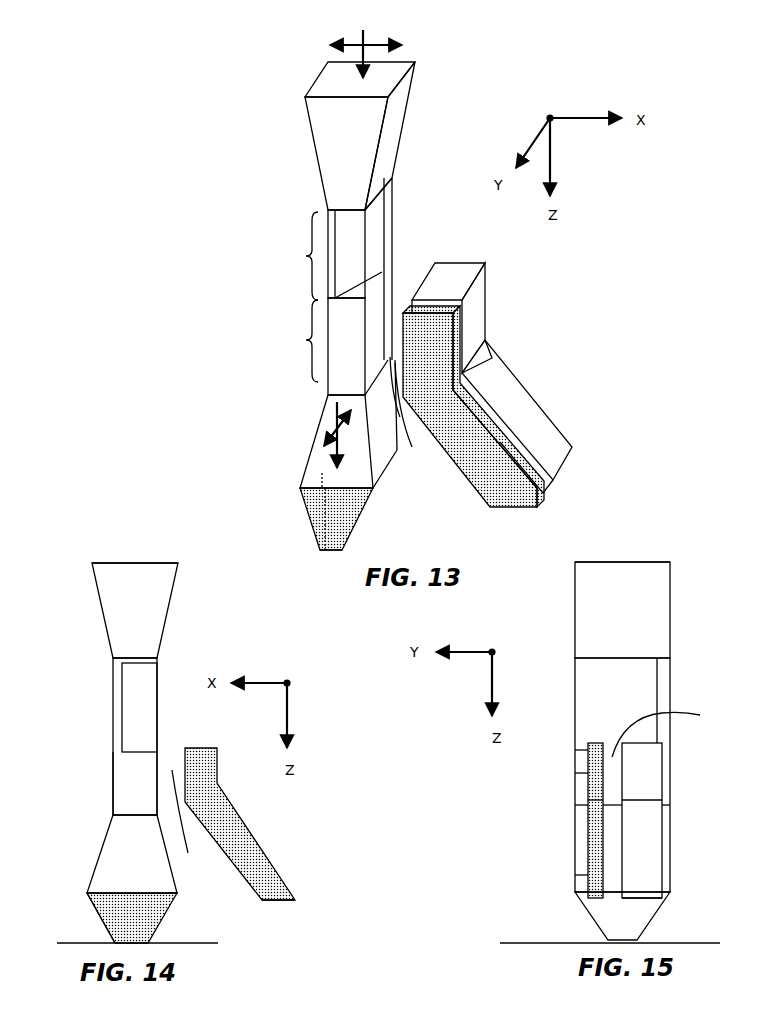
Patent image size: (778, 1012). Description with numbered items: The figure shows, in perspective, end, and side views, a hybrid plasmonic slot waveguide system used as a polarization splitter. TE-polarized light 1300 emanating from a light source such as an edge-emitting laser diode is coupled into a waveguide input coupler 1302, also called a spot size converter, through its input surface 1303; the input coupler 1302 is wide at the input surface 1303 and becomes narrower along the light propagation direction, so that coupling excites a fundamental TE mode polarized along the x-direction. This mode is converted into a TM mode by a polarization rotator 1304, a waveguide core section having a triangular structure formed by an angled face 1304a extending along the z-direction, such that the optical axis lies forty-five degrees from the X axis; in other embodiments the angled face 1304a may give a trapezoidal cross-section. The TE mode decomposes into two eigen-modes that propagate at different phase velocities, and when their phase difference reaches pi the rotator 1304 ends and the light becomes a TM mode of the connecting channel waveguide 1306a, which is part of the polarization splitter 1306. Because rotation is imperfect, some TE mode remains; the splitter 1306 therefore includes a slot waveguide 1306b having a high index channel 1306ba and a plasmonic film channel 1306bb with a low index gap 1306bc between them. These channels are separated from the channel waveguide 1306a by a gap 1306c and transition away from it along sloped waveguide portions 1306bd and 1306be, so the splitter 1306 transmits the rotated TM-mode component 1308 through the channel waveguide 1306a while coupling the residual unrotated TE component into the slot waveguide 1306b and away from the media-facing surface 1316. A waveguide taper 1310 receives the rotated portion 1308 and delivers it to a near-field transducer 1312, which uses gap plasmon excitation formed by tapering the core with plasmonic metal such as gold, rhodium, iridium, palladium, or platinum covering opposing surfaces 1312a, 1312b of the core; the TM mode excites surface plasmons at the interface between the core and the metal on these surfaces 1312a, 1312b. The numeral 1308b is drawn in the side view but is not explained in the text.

In FIG. 13, the TE-polarized light 1300 is at (360, 34).
In FIG. 13, the waveguide input coupler 1302 is at (310, 122).
In FIG. 14, the waveguide input coupler 1302 is at (93, 588).
In FIG. 15, the waveguide input coupler 1302 is at (575, 598).
In FIG. 13, the input surface 1303 is at (328, 72).
In FIG. 14, the input surface 1303 is at (130, 562).
In FIG. 15, the input surface 1303 is at (616, 562).
In FIG. 13, the polarization rotator 1304 is at (304, 256).
In FIG. 14, the polarization rotator 1304 is at (113, 697).
In FIG. 13, the angled face 1304a is at (393, 220).
In FIG. 14, the angled face 1304a is at (150, 703).
In FIG. 15, the angled face 1304a is at (583, 670).
In FIG. 13, the polarization splitter 1306 is at (304, 342).
In FIG. 13, the channel waveguide 1306a is at (395, 303).
In FIG. 14, the channel waveguide 1306a is at (113, 795).
In FIG. 13, the slot waveguide 1306b is at (548, 364).
In FIG. 13, the high index channel 1306ba is at (485, 313).
In FIG. 15, the high index channel 1306ba is at (663, 768).
In FIG. 13, the plasmonic film channel 1306bb is at (490, 350).
In FIG. 14, the plasmonic film channel 1306bb is at (215, 790).
In FIG. 15, the plasmonic film channel 1306bb is at (577, 774).
In FIG. 13, the low index gap 1306bc is at (443, 275).
In FIG. 13, the sloped waveguide portion 1306bd is at (572, 453).
In FIG. 15, the sloped waveguide portion 1306bd is at (655, 880).
In FIG. 13, the sloped waveguide portion 1306be is at (545, 493).
In FIG. 14, the sloped waveguide portion 1306be is at (273, 883).
In FIG. 15, the sloped waveguide portion 1306be is at (577, 875).
In FIG. 13, the gap 1306c is at (420, 418).
In FIG. 14, the gap 1306c is at (199, 823).
In FIG. 15, the gap 1306c is at (680, 734).
In FIG. 13, the rotated portion of the light 1308 is at (326, 410).
In FIG. 15, the inlet wall 1308b is at (577, 795).
In FIG. 13, the waveguide taper 1310 is at (313, 450).
In FIG. 14, the waveguide taper 1310 is at (93, 863).
In FIG. 15, the waveguide taper 1310 is at (577, 822).
In FIG. 13, the near-field transducer 1312 is at (303, 500).
In FIG. 14, the near-field transducer 1312 is at (92, 908).
In FIG. 15, the near-field transducer 1312 is at (583, 912).
In FIG. 13, the opposing surface 1312a is at (310, 522).
In FIG. 14, the opposing surface 1312a is at (117, 935).
In FIG. 13, the opposing surface 1312b is at (322, 473).
In FIG. 13, the media-facing surface 1316 is at (327, 553).
In FIG. 14, the media-facing surface 1316 is at (207, 943).
In FIG. 15, the media-facing surface 1316 is at (505, 943).